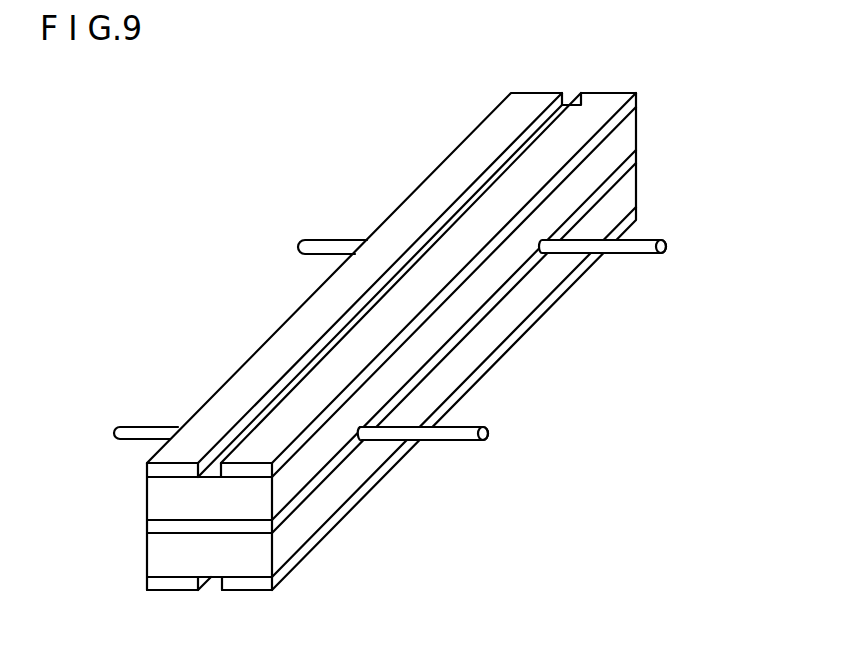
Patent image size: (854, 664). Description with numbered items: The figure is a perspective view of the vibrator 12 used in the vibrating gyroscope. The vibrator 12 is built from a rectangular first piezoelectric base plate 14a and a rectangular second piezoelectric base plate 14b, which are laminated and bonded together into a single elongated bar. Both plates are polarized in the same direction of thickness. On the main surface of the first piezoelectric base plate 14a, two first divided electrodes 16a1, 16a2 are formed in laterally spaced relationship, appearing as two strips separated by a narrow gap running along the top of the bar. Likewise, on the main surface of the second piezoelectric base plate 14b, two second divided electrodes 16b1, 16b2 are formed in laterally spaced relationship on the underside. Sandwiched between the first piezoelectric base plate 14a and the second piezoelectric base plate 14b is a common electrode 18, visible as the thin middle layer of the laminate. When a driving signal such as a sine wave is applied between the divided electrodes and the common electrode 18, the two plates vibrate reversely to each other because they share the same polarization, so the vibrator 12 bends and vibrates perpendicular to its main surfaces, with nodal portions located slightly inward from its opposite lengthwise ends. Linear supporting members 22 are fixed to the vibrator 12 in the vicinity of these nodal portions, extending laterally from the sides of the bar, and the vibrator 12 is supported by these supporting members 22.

The vibrator 12 is at (428, 175).
The first piezoelectric base plate 14a is at (627, 137).
The second piezoelectric base plate 14b is at (627, 195).
The common electrode 18 is at (627, 162).
The first divided electrode 16a1 is at (222, 407).
The first divided electrode 16a2 is at (333, 365).
The second divided electrode 16b1 is at (253, 583).
The second divided electrode 16b2 is at (178, 583).
The supporting member 22 is at (323, 250).